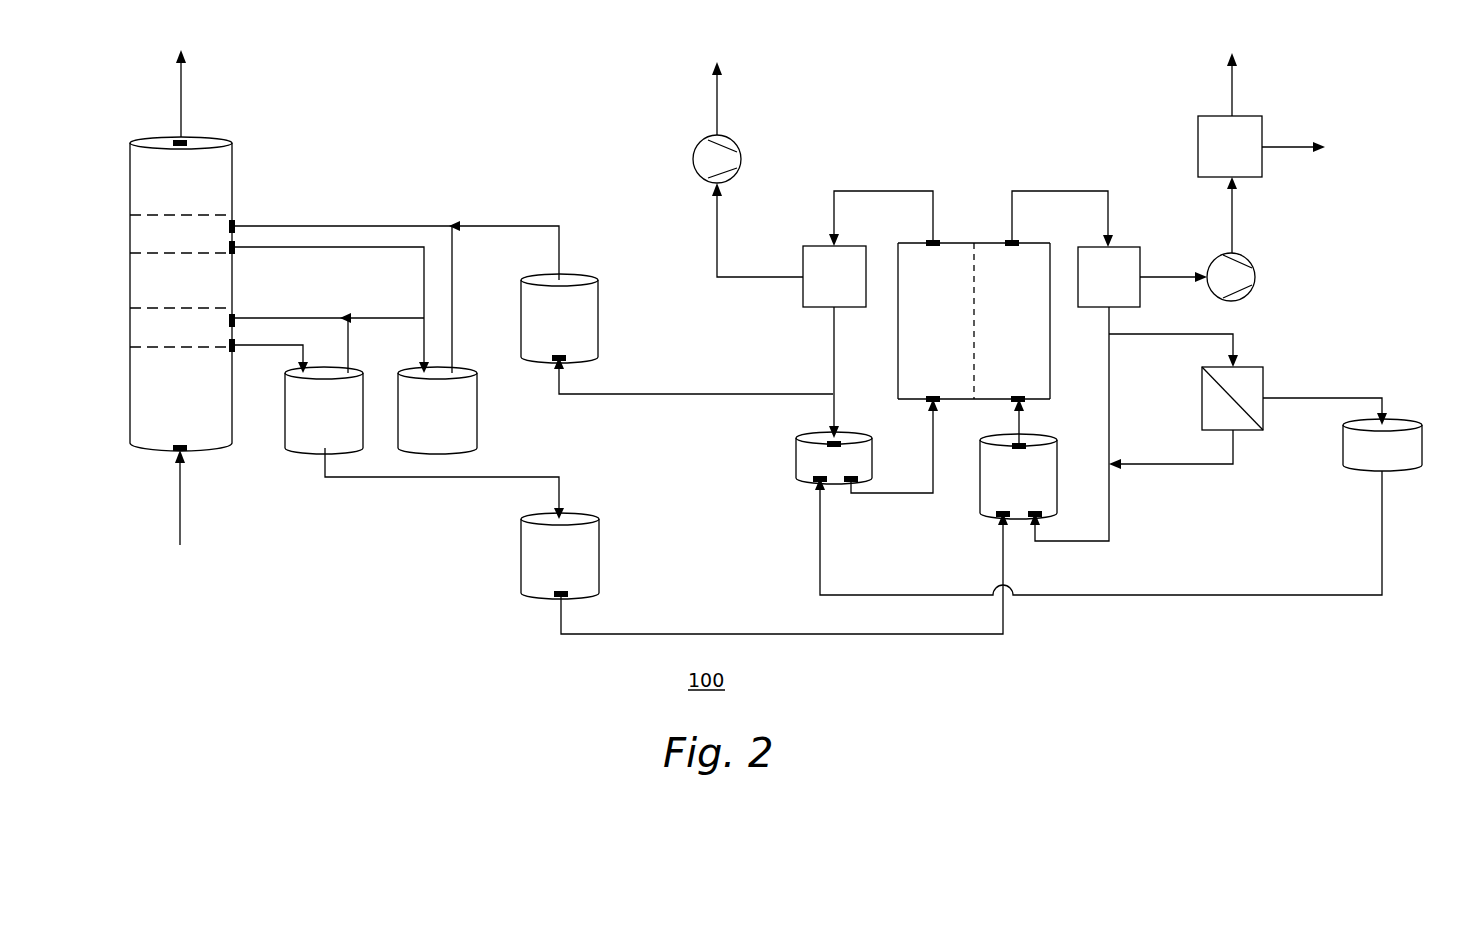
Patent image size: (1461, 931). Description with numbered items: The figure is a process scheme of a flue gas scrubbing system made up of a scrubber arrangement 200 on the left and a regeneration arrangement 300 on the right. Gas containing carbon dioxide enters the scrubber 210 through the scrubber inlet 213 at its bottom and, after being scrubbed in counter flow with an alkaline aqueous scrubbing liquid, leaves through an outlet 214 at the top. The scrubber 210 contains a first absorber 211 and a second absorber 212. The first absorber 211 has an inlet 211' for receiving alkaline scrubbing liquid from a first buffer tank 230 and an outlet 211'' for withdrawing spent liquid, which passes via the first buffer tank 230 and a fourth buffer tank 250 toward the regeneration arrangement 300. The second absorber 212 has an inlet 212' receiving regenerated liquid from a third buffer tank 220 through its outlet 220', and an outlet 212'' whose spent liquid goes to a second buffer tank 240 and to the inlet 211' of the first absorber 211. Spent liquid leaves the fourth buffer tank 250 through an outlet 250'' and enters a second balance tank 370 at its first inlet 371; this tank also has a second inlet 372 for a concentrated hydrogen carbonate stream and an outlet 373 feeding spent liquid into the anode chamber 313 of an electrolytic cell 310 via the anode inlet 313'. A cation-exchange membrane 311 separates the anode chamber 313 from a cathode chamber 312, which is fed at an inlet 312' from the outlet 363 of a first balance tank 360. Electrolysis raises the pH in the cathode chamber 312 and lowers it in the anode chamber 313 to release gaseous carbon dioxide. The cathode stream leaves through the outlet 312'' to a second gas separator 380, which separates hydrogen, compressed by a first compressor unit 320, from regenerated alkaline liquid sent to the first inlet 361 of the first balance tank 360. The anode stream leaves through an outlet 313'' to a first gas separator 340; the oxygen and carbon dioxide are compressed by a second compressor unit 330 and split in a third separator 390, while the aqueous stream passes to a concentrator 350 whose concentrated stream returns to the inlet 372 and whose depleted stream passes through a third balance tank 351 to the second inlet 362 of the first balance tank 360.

The scrubber arrangement 200 is at (392, 104).
The regeneration arrangement 300 is at (1000, 104).
The scrubber 210 is at (218, 124).
The first absorber 211 is at (149, 327).
The inlet of the first absorber 211' is at (207, 301).
The outlet of the first absorber 211'' is at (256, 367).
The second absorber 212 is at (149, 234).
The inlet of the second absorber 212' is at (208, 202).
The outlet of the second absorber 212'' is at (263, 261).
The scrubber inlet 213 is at (170, 452).
The column top outlet 214 is at (172, 142).
The third buffer tank 220 is at (580, 315).
The tank outlet 220' is at (664, 383).
The first buffer tank 230 is at (295, 436).
The second buffer tank 240 is at (408, 436).
The fourth buffer tank 250 is at (580, 549).
The tank outlet 250'' is at (750, 580).
The electrolytic cell 310 is at (960, 230).
The membrane 311 is at (972, 341).
The cathode chamber 312 is at (910, 321).
The first compartment inlet 312' is at (953, 417).
The outlet for regenerated aqueous scrubbing liquid 312'' is at (926, 269).
The anode chamber 313 is at (1038, 321).
The anode inlet 313' is at (1045, 411).
The second compartment outlet 313'' is at (1053, 245).
The first compressor unit 320 is at (738, 140).
The second compressor unit 330 is at (1250, 258).
The first gas separator 340 is at (1122, 246).
The concentrator 350 is at (1262, 365).
The third balance tank 351 is at (1388, 424).
The first balance tank 360 is at (796, 464).
The first inlet of the first balance tank 361 is at (840, 443).
The second inlet of the first balance tank 362 is at (814, 484).
The outlet of the first balance tank 363 is at (858, 486).
The second balance tank 370 is at (990, 496).
The first inlet of the second balance tank 371 is at (996, 520).
The second inlet of the second balance tank 372 is at (1043, 514).
The outlet of the second balance tank 373 is at (1026, 448).
The second gas separator 380 is at (808, 246).
The third separator 390 is at (1252, 116).